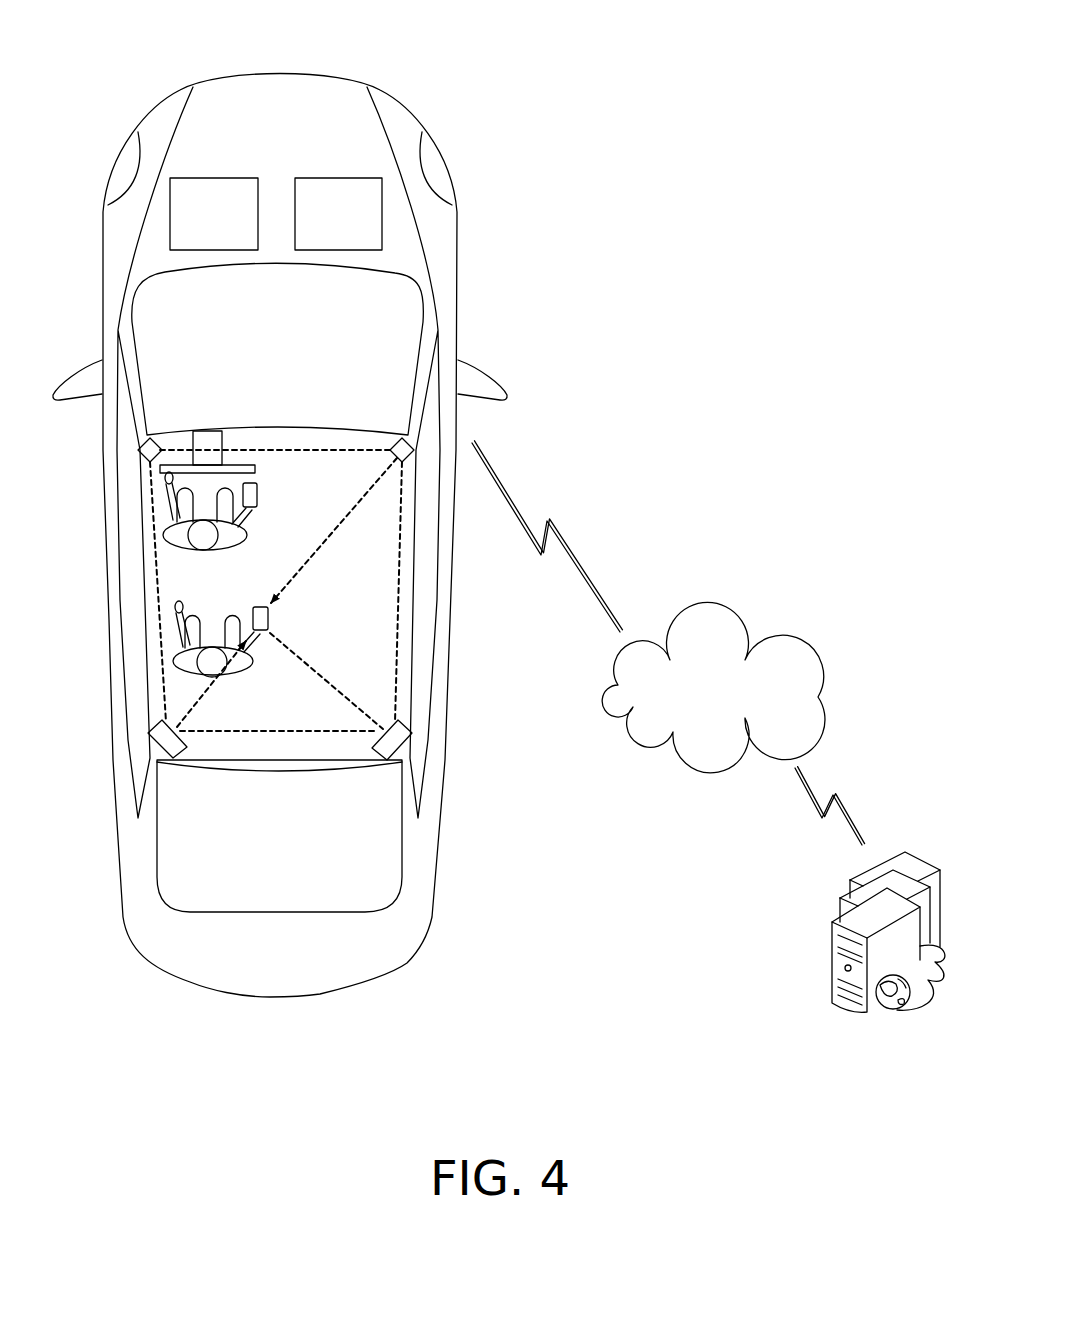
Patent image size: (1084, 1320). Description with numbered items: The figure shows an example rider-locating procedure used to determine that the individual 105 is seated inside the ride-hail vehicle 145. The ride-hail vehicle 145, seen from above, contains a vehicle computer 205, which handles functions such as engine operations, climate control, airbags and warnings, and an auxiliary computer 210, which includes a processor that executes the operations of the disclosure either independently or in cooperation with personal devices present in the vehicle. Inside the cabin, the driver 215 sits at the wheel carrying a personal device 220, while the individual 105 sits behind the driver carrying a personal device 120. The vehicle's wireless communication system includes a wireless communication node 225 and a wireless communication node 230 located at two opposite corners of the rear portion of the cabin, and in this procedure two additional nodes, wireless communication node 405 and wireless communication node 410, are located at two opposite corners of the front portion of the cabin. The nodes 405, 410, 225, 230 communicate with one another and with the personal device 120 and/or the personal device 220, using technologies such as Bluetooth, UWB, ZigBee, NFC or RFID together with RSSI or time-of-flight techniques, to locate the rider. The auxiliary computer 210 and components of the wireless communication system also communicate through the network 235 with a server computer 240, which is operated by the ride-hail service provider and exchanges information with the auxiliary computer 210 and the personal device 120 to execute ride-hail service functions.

The ride-hail vehicle 145 is at (488, 122).
The vehicle computer 205 is at (195, 221).
The auxiliary computer 210 is at (319, 221).
The wireless communication node 405 is at (151, 440).
The wireless communication node 410 is at (397, 438).
The wireless communication node 225 is at (187, 746).
The wireless communication node 230 is at (376, 741).
The driver 215 is at (220, 552).
The personal device 220 is at (257, 495).
The individual 105 is at (222, 675).
The personal device 120 is at (258, 605).
The network 235 is at (761, 703).
The server computer 240 is at (815, 962).